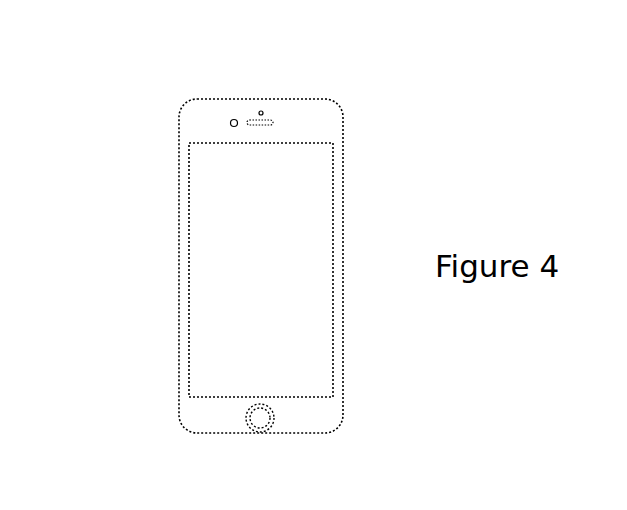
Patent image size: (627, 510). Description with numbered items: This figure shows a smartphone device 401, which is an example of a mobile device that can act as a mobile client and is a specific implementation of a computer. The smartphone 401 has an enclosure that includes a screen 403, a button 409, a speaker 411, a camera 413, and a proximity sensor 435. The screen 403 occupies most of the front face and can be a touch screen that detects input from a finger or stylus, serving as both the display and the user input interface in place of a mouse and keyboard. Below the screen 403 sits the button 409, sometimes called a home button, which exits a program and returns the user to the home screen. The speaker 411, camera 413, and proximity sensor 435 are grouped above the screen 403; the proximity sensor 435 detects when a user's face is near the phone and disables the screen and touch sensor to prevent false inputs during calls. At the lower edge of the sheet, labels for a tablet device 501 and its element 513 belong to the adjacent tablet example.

The smartphone device 401 is at (312, 58).
The screen 403 is at (261, 270).
The button 409 is at (264, 421).
The speaker 411 is at (277, 122).
The camera 413 is at (261, 110).
The proximity sensor 435 is at (229, 120).
The tablet device 501 is at (440, 500).
The component of next figure 513 is at (386, 486).